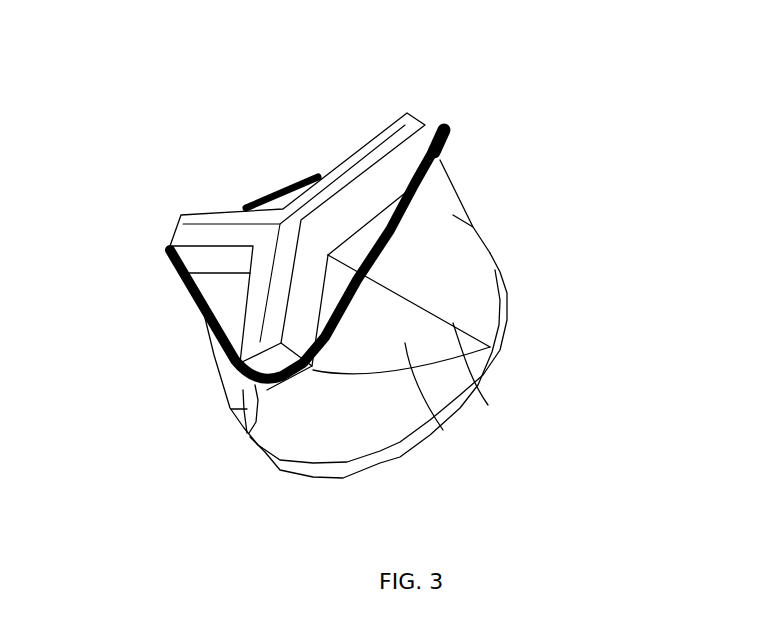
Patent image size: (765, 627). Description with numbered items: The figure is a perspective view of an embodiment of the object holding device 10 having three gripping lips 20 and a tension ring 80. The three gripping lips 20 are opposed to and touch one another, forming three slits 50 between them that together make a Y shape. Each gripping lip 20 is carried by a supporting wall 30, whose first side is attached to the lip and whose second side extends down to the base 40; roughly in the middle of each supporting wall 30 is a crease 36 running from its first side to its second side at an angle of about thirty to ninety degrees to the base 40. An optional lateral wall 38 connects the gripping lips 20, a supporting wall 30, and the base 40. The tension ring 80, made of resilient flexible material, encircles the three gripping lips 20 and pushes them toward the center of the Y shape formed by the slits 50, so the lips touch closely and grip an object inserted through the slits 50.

The object holding device 10 is at (267, 90).
The gripping lip 20 is at (181, 215).
The supporting wall 30 is at (477, 227).
The crease 36 is at (231, 413).
The lateral wall 38 is at (313, 423).
The base 40 is at (495, 355).
The slit 50 is at (193, 220).
The tension ring 80 is at (262, 207).